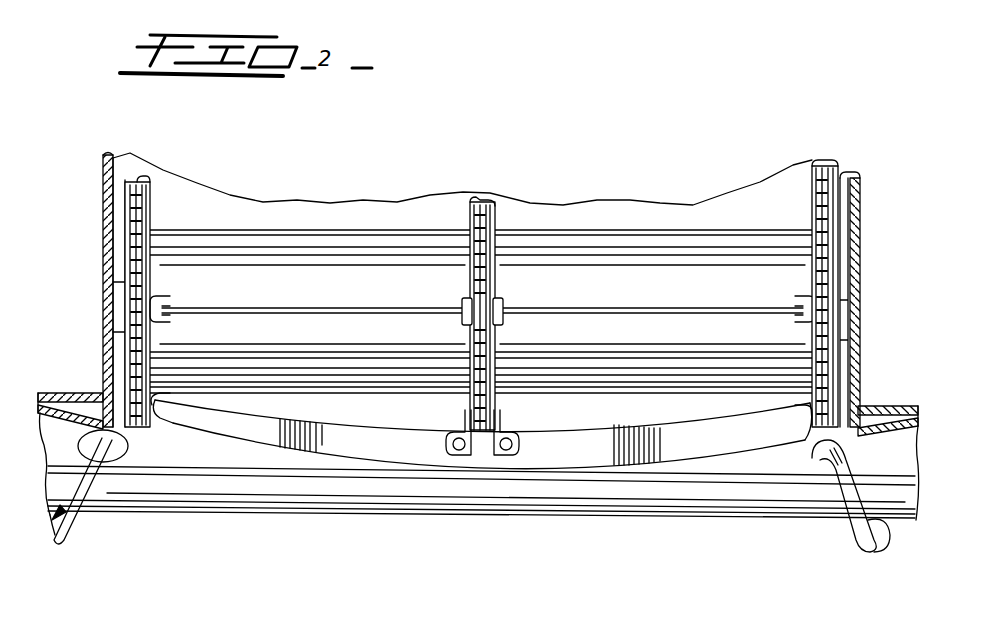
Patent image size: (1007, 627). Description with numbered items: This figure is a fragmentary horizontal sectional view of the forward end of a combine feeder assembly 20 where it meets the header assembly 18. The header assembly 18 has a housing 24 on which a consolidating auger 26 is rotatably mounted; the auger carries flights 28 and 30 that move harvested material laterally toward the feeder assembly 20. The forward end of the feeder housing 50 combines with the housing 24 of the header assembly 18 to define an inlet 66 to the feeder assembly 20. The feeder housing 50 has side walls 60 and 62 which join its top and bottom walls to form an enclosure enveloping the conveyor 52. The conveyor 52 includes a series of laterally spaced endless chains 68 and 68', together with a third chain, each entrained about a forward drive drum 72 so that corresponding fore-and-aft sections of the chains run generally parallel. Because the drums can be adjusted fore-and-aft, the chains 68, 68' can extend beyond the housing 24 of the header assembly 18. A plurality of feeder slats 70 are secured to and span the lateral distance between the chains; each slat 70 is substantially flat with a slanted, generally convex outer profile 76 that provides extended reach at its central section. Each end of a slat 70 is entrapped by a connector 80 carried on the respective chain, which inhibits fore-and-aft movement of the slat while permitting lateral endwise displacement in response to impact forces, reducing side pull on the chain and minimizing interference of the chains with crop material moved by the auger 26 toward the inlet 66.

The header assembly 18 is at (55, 540).
The feeder assembly 20 is at (100, 218).
The housing 24 is at (892, 406).
The consolidating auger 26 is at (682, 512).
The flight 28 is at (78, 530).
The flight 30 is at (860, 548).
The feeder housing 50 is at (862, 208).
The conveyor 52 is at (123, 243).
The side wall 60 is at (103, 180).
The side wall 62 is at (862, 268).
The inlet 66 is at (74, 403).
The endless chain 68 is at (162, 285).
The endless chain 68' is at (499, 308).
The feeder slat 70 is at (334, 306).
The forward drive sprocket or drum 72 is at (712, 247).
The convex outer profile 76 is at (224, 445).
The connector 80 is at (162, 302).